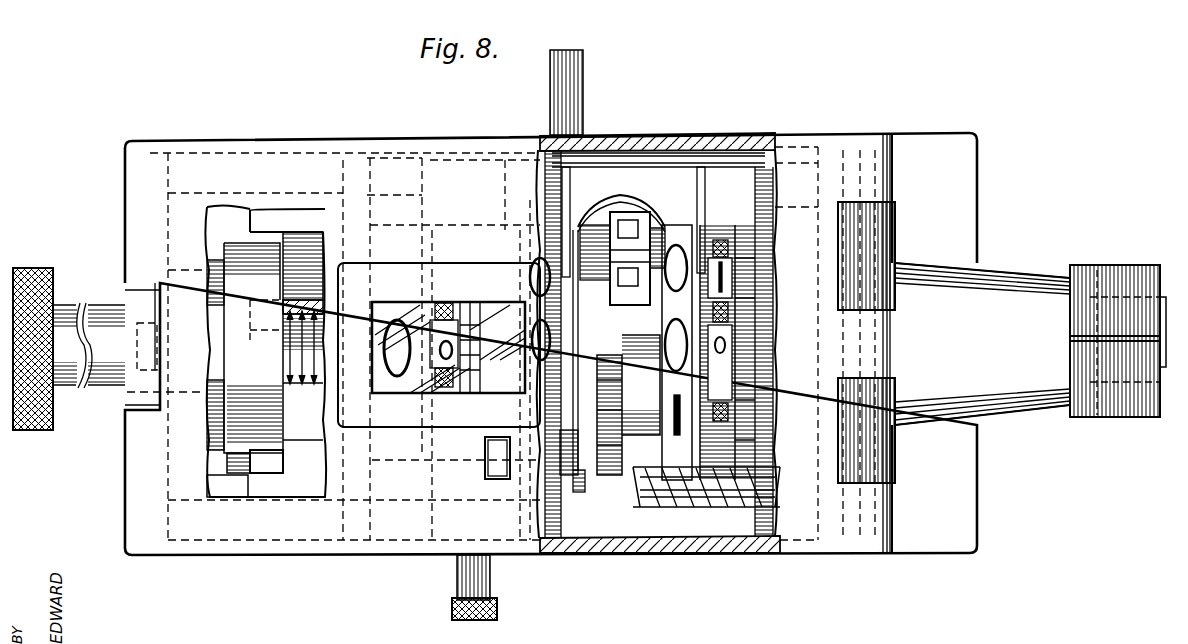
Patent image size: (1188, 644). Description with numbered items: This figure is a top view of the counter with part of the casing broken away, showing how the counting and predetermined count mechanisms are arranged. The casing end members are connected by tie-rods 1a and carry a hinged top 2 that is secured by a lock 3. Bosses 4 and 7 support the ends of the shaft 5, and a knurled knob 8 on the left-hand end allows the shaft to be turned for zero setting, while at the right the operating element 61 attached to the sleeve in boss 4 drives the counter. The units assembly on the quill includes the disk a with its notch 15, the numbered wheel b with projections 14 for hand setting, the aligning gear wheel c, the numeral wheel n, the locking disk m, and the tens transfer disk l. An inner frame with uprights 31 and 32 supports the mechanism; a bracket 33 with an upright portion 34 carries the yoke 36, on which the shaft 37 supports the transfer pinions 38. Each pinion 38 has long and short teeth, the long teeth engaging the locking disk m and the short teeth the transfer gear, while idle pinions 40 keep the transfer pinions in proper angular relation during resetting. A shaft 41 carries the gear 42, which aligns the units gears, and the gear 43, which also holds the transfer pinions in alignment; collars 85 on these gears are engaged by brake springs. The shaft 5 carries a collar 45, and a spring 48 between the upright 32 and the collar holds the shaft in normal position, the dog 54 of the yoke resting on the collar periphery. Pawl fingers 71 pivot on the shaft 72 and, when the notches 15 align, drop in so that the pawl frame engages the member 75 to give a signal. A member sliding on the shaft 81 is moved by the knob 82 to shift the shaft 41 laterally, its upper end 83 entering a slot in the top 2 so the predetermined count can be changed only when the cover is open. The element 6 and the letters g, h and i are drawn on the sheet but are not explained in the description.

The hinged top 2 is at (135, 150).
The tie-rods 1a is at (212, 155).
The lock 3 is at (192, 408).
The boss 4 is at (1008, 277).
The shaft 5 is at (283, 337).
The shaft 6 is at (98, 305).
The boss 7 is at (215, 422).
The knurled knob 8 is at (30, 266).
The projections 14 is at (722, 240).
The notch 15 is at (722, 285).
The upright member 31 is at (845, 178).
The upright member 32 is at (345, 530).
The bracket 33 is at (298, 483).
The upright portion 34 is at (228, 483).
The yoke 36 is at (292, 225).
The shaft 37 is at (302, 243).
The transfer pinions 38 is at (622, 265).
The pinions 40 is at (640, 350).
The shaft 41 is at (643, 430).
The wheel 42 is at (762, 485).
The gear 43 is at (606, 478).
The collar 45 is at (280, 458).
The spring 48 is at (300, 385).
The dog 54 is at (227, 462).
The operating element 61 is at (1095, 265).
The pawl fingers 71 is at (437, 190).
The shaft 72 is at (637, 228).
The member 75 is at (583, 57).
The shaft 81 is at (683, 507).
The knob 82 is at (457, 583).
The upper end 83 is at (498, 480).
The collars 85 is at (597, 475).
The disk a is at (420, 305).
The numbered wheel b is at (441, 303).
The gear wheel c is at (482, 350).
The position g is at (498, 348).
The plate h is at (403, 392).
The position i is at (430, 462).
The tens transfer disk l is at (490, 262).
The locking disk m is at (512, 262).
The numeral wheel n is at (556, 460).